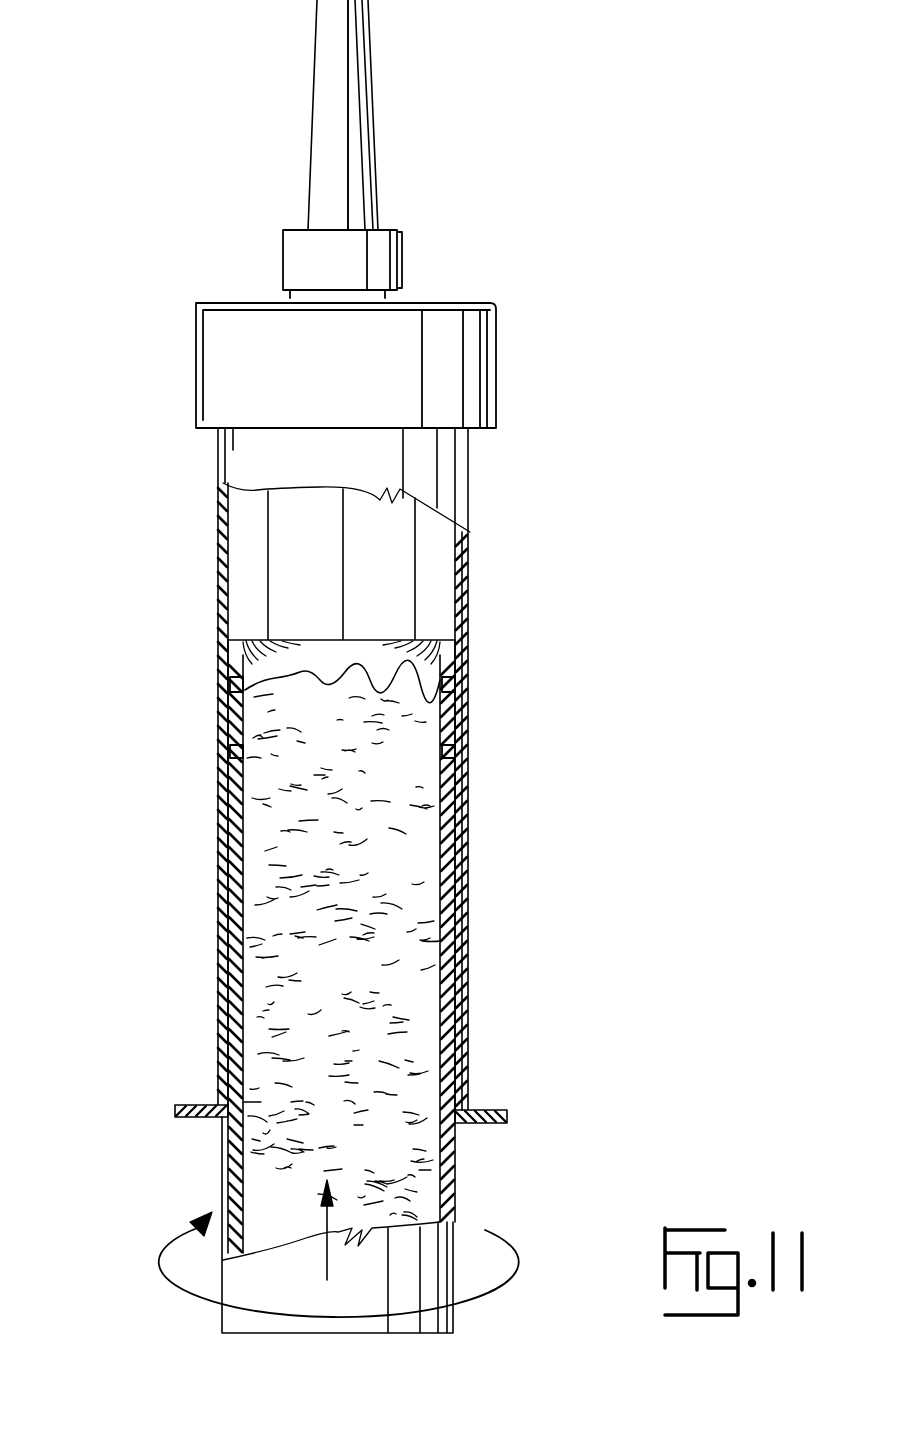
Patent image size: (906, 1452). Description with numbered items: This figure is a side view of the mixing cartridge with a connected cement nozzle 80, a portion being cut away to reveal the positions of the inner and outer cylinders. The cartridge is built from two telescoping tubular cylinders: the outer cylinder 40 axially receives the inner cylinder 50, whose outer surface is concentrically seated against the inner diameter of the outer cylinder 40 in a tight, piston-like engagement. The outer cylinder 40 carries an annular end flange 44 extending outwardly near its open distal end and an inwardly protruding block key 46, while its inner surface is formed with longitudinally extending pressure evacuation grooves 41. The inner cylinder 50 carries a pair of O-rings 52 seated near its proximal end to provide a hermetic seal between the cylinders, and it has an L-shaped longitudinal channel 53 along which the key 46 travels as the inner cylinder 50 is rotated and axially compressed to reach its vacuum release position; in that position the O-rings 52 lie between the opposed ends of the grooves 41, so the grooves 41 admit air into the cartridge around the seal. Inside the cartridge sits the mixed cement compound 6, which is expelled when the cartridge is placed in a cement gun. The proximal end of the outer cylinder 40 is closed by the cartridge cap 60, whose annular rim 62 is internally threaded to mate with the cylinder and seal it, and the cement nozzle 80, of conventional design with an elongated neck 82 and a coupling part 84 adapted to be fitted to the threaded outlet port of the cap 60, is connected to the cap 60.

The mixed cement compound 6 is at (380, 950).
The outer cylinder 40 is at (445, 490).
The pressure evacuation grooves 41 is at (230, 800).
The annular end flange 44 is at (493, 1110).
The key 46 is at (222, 1118).
The inner cylinder 50 is at (327, 1225).
The O-rings 52 is at (230, 750).
The L-shaped longitudinal channel 53 is at (230, 1165).
The cartridge cap 60 is at (353, 352).
The annular rim 62 is at (207, 357).
The cement nozzle 80 is at (313, 93).
The elongated neck 82 is at (353, 145).
The nozzle collar 84 is at (384, 256).